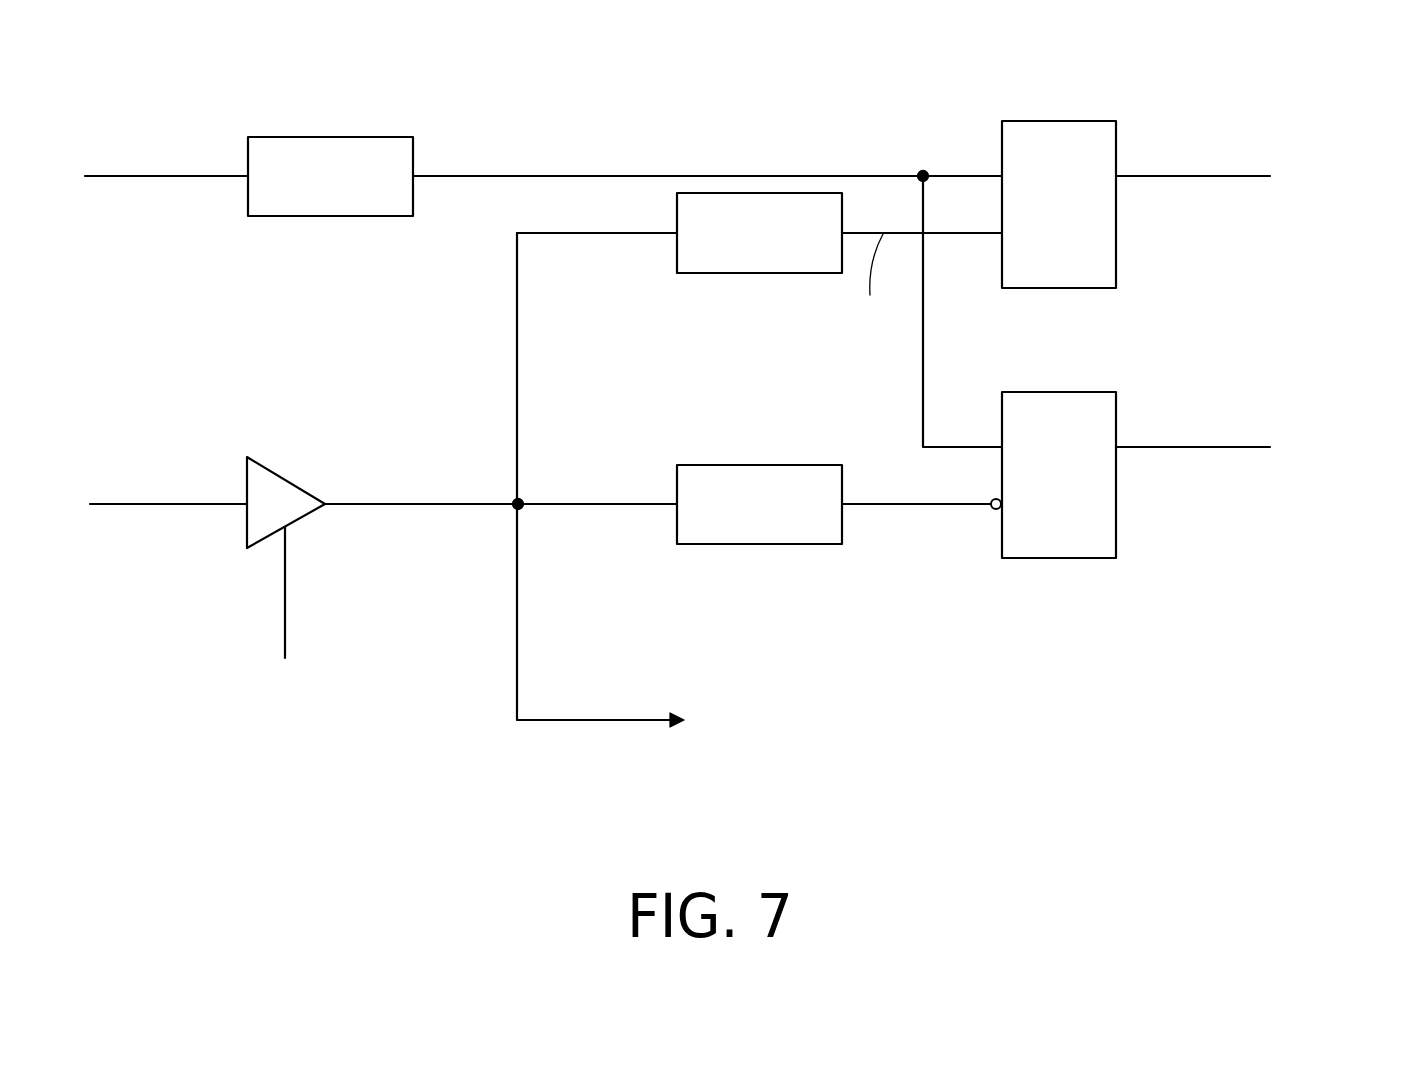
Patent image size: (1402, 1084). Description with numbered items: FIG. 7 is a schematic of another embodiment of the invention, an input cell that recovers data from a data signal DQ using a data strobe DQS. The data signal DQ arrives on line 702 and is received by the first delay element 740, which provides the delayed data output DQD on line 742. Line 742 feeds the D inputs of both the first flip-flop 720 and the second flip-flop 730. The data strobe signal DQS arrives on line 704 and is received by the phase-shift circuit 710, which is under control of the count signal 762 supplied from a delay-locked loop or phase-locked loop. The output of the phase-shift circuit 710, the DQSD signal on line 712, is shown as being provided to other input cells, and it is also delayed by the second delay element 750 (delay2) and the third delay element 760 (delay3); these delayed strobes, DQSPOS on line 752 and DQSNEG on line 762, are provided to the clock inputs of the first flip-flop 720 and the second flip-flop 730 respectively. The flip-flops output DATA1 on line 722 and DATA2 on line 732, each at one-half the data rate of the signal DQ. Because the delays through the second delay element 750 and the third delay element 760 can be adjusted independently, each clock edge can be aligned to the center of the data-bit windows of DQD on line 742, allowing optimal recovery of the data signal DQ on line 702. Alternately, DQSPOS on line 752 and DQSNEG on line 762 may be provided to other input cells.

The line 702 is at (115, 177).
The line 704 is at (115, 505).
The phase-shift circuit 710 is at (285, 480).
The line 712 is at (553, 505).
The first flip-flop 720 is at (1057, 121).
The line 722 is at (1173, 176).
The second flip-flop 730 is at (1057, 392).
The line 732 is at (1173, 447).
The first delay element 740 is at (330, 137).
The line 742 is at (640, 176).
The second delay element 750 is at (697, 273).
The line 752 is at (807, 332).
The third delay element 760 is at (696, 465).
The count signal / line 762 is at (287, 580).